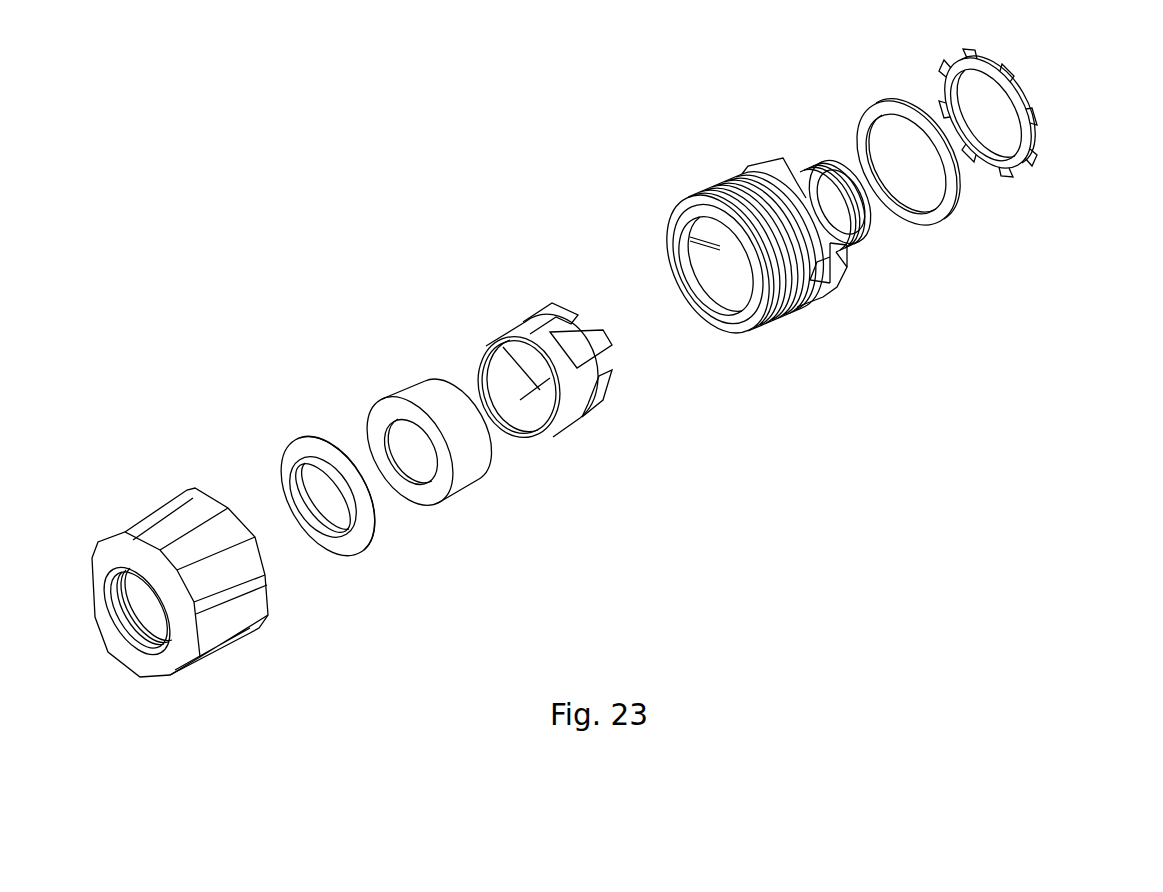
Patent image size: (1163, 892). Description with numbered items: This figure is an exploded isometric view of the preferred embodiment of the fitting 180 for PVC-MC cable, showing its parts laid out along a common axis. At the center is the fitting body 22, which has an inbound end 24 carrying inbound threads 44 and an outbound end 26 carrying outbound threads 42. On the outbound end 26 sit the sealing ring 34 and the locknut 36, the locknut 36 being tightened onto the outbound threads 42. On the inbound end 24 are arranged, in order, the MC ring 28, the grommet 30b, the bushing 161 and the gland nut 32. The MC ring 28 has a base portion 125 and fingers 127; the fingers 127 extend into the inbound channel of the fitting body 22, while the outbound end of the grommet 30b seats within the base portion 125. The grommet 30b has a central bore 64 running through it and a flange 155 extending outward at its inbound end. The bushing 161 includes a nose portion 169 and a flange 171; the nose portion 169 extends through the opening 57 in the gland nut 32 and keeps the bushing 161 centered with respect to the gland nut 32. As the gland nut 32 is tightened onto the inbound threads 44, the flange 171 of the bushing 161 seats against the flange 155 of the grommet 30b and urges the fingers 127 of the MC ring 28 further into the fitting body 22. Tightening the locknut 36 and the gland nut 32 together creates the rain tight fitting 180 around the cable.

The fitting 180 is at (322, 186).
The gland nut 32 is at (245, 638).
The opening 57 is at (133, 610).
The bushing 161 is at (362, 548).
The nose portion 169 is at (287, 460).
The flange 171 is at (322, 438).
The flange 155 is at (383, 398).
The central bore 64 is at (410, 448).
The grommet 30b is at (468, 473).
The base portion 125 is at (488, 360).
The fingers 127 is at (537, 315).
The MC ring 28 is at (577, 413).
The fitting body 22 is at (790, 310).
The inbound end 24 is at (675, 273).
The inbound threads 44 is at (707, 197).
The outbound end 26 is at (833, 165).
The outbound threads 42 is at (857, 250).
The sealing ring 34 is at (940, 222).
The locknut 36 is at (1021, 176).